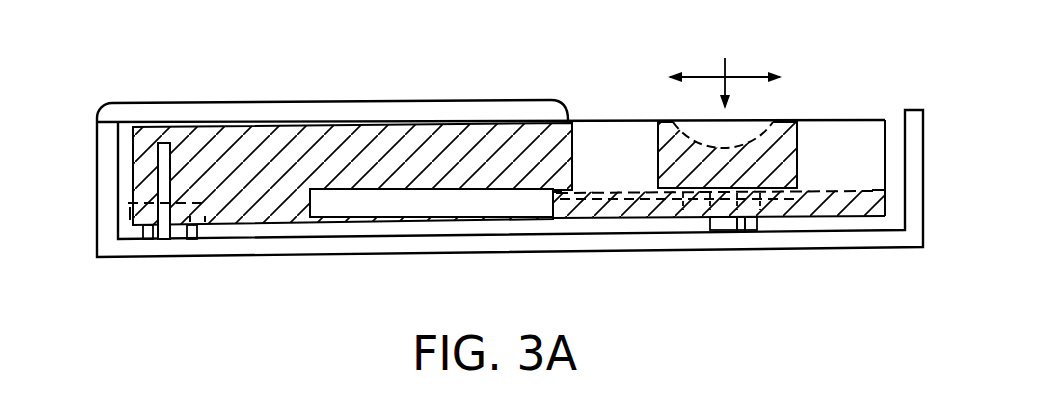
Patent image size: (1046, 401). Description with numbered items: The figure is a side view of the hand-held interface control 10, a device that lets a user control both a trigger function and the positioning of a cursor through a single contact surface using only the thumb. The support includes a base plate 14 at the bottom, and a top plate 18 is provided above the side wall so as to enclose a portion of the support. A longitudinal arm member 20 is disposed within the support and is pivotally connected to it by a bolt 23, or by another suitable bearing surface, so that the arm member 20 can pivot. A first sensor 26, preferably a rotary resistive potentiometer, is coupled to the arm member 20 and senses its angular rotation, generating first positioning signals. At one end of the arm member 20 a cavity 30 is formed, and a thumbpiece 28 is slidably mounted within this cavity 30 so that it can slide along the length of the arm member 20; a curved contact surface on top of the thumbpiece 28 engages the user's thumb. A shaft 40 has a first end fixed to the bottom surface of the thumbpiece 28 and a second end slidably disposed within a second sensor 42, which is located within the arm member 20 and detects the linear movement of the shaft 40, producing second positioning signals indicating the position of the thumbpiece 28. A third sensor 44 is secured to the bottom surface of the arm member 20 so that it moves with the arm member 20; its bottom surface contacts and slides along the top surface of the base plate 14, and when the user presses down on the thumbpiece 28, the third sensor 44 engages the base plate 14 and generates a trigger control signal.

The hand-held interface control 10 is at (563, 52).
The base plate 14 is at (878, 248).
The top plate 18 is at (327, 110).
The longitudinal arm member 20 is at (262, 195).
The bolt 23 is at (160, 172).
The first sensor 26 is at (190, 225).
The thumbpiece 28 is at (690, 180).
The cavity 30 is at (628, 180).
The shaft 40 is at (590, 180).
The second sensor 42 is at (448, 208).
The third sensor 44 is at (750, 180).